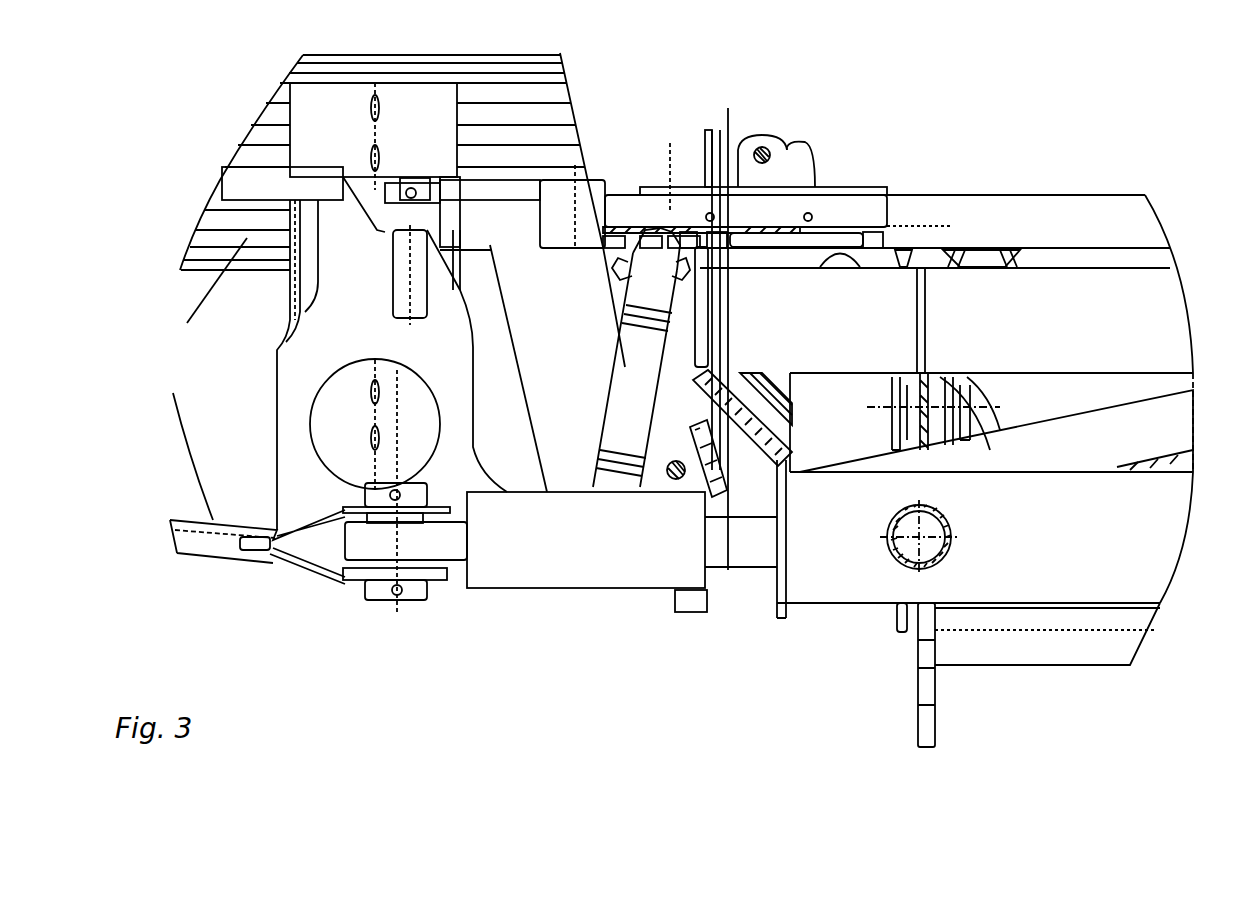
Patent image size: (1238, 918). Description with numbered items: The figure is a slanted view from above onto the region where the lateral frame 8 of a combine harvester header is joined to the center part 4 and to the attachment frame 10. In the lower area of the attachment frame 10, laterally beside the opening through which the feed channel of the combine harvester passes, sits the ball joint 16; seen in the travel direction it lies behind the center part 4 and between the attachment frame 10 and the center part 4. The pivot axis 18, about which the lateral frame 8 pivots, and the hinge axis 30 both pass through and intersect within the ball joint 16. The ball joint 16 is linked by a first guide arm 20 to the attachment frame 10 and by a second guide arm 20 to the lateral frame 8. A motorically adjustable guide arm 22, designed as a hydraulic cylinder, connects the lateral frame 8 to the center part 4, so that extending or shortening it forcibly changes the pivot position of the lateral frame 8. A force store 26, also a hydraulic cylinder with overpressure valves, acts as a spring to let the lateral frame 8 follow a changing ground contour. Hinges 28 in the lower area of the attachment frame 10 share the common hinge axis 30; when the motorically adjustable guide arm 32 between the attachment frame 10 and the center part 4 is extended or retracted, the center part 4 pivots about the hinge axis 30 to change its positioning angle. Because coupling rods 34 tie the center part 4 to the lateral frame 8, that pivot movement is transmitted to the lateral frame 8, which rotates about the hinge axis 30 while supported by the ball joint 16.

The center part 4 is at (1032, 290).
The lateral frame 8 is at (283, 400).
The attachment frame 10 is at (832, 578).
The ball joint 16 is at (752, 440).
The pivot axis 18 is at (748, 440).
The guide arm 20 is at (558, 440).
The motorically adjustable guide arm 22 is at (527, 203).
The force store 26 is at (563, 563).
The hinges 28 is at (943, 377).
The hinge axis 30 is at (967, 377).
The motorically adjustable guide arm 32 is at (830, 400).
The coupling rods 34 is at (625, 370).